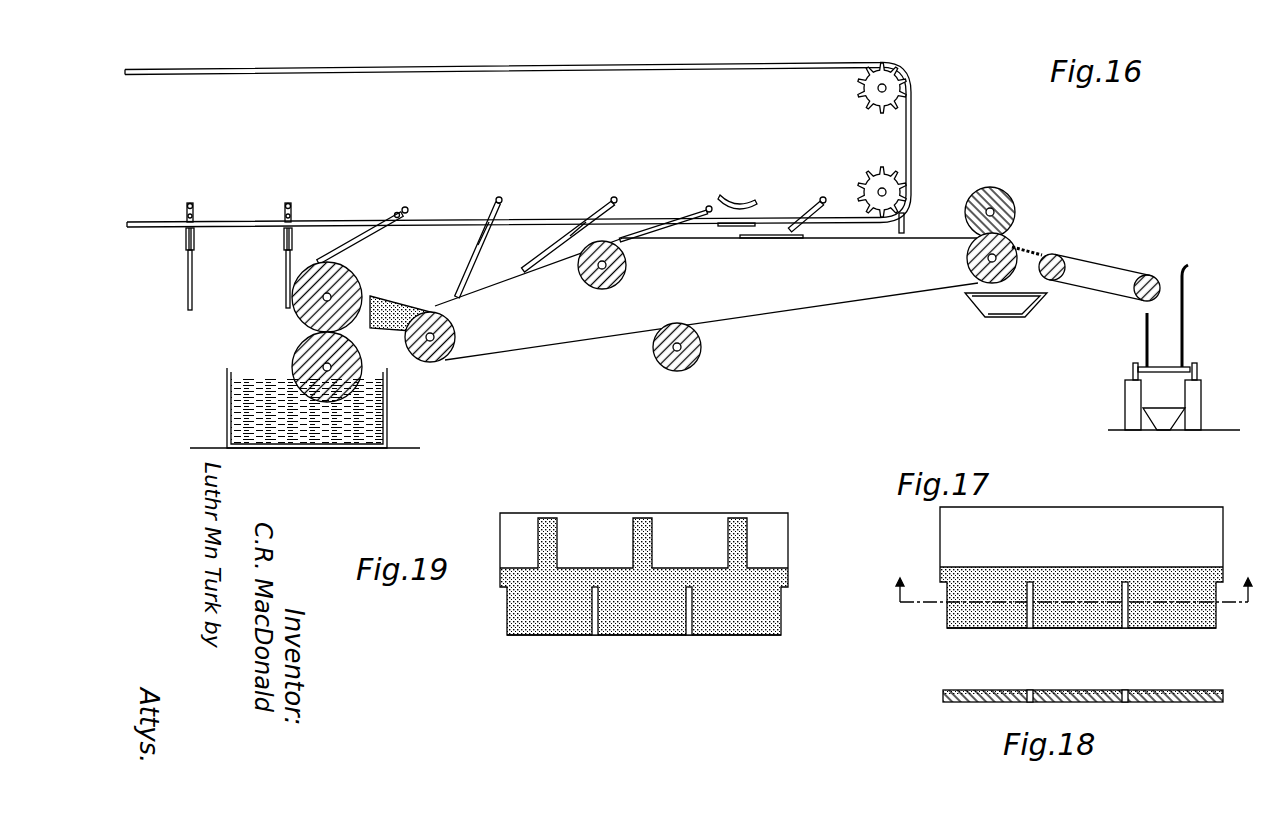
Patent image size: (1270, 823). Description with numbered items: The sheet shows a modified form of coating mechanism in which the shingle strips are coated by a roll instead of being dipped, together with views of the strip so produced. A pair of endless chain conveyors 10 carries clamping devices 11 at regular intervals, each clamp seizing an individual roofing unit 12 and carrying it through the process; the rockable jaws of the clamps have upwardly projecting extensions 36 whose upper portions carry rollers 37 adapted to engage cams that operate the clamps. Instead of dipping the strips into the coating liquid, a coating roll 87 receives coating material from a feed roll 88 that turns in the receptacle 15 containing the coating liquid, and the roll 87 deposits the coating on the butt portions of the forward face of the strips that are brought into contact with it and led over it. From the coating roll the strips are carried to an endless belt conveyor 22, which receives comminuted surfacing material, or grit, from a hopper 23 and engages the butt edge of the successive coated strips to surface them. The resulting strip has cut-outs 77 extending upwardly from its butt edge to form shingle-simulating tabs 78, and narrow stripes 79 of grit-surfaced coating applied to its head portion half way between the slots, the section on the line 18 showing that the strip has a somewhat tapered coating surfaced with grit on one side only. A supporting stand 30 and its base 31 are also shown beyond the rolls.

In FIG. 16, the endless conveyors 10 is at (379, 74).
In FIG. 16, the clamping devices 11 is at (284, 245).
In FIG. 16, the roofing units 12 is at (188, 282).
In FIG. 19, the roofing units 12 is at (657, 513).
In FIG. 17, the roofing units 12 is at (1082, 514).
In FIG. 16, the receptacle 15 is at (228, 405).
In FIG. 17, the sprocket wheel 18 is at (1074, 580).
In FIG. 16, the conveyor 22 is at (567, 342).
In FIG. 16, the hopper 23 is at (405, 306).
In FIG. 16, the stand 30 is at (1184, 316).
In FIG. 16, the base funnel 31 is at (1168, 420).
In FIG. 16, the extensions 36 is at (495, 207).
In FIG. 16, the rollers 37 is at (288, 205).
In FIG. 19, the cut-outs 77 is at (597, 625).
In FIG. 17, the cut-outs 77 is at (1030, 626).
In FIG. 18, the cut-outs 77 is at (1128, 690).
In FIG. 19, the shingle-simulating tabs 78 is at (545, 622).
In FIG. 17, the shingle-simulating tabs 78 is at (985, 630).
In FIG. 18, the shingle-simulating tabs 78 is at (1082, 690).
In FIG. 19, the stripes 79 is at (638, 530).
In FIG. 16, the coating roll 87 is at (345, 283).
In FIG. 16, the feed roll 88 is at (305, 350).